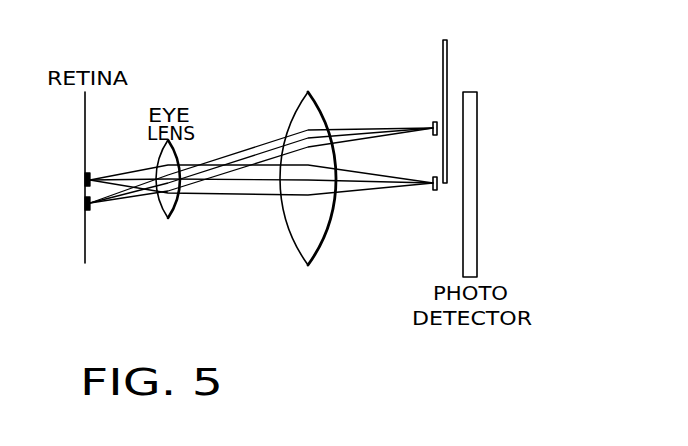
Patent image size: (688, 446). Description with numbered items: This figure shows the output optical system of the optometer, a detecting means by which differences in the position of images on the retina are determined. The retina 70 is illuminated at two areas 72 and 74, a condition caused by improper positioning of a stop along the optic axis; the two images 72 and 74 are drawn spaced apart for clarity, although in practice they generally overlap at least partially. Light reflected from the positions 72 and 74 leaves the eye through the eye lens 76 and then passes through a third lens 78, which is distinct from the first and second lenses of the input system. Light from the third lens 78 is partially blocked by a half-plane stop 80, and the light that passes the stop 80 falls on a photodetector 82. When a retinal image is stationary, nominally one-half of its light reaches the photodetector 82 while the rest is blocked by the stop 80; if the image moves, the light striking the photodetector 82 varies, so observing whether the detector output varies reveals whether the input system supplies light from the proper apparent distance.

The retina 70 is at (85, 127).
The illuminated area (image) 72 is at (85, 178).
The illuminated area (image) 74 is at (85, 203).
The eye lens 76 is at (178, 200).
The third lens 78 is at (331, 228).
The half-plane stop 80 is at (443, 52).
The photodetector 82 is at (472, 92).